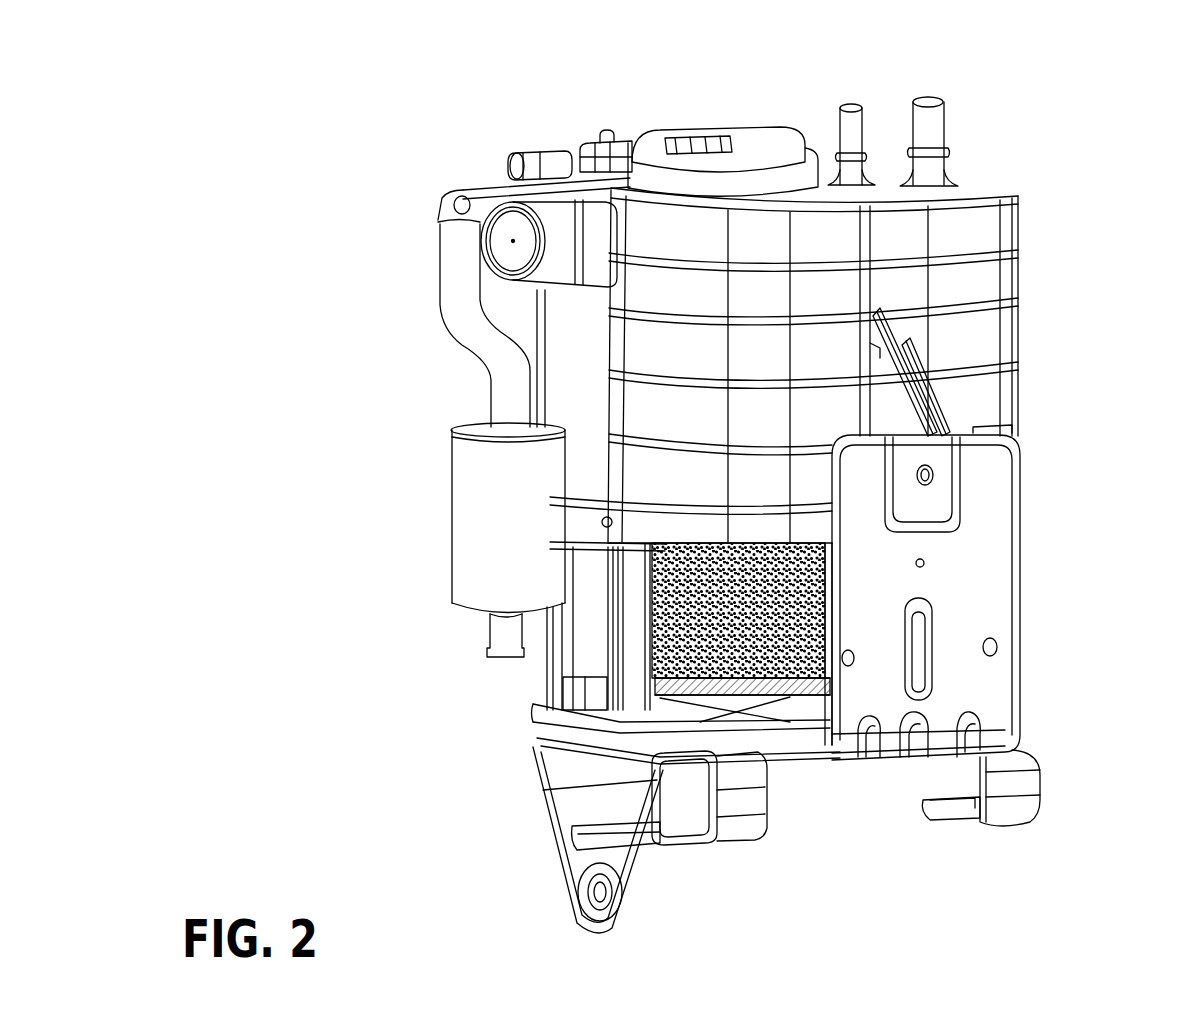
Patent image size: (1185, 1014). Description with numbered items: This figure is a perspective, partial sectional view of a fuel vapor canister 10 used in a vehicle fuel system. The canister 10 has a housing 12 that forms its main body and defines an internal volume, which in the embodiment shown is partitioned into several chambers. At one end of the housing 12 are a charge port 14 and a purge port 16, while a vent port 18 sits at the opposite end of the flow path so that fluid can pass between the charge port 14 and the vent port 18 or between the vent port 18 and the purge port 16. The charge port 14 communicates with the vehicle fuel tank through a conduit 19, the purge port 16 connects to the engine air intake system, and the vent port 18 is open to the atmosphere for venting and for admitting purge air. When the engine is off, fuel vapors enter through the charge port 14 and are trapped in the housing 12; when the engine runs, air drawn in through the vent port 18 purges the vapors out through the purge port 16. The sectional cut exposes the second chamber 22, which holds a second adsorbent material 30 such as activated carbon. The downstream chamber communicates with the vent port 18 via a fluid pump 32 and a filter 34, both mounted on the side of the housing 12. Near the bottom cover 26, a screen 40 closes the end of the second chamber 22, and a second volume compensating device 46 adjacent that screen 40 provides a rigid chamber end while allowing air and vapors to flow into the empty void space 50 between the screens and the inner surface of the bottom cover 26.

The fuel vapor canister 10 is at (527, 98).
The housing 12 is at (1016, 267).
The charge port 14 is at (930, 118).
The purge port 16 is at (850, 125).
The vent port 18 is at (608, 130).
The conduit 19 is at (450, 268).
The second chamber 22 is at (833, 593).
The bottom cover 26 is at (543, 717).
The second adsorbent material 30 is at (833, 577).
The fluid pump 32 is at (500, 190).
The filter 34 is at (478, 483).
The screen 40 is at (805, 690).
The second volume compensating device 46 is at (667, 697).
The empty void space 50 is at (707, 700).